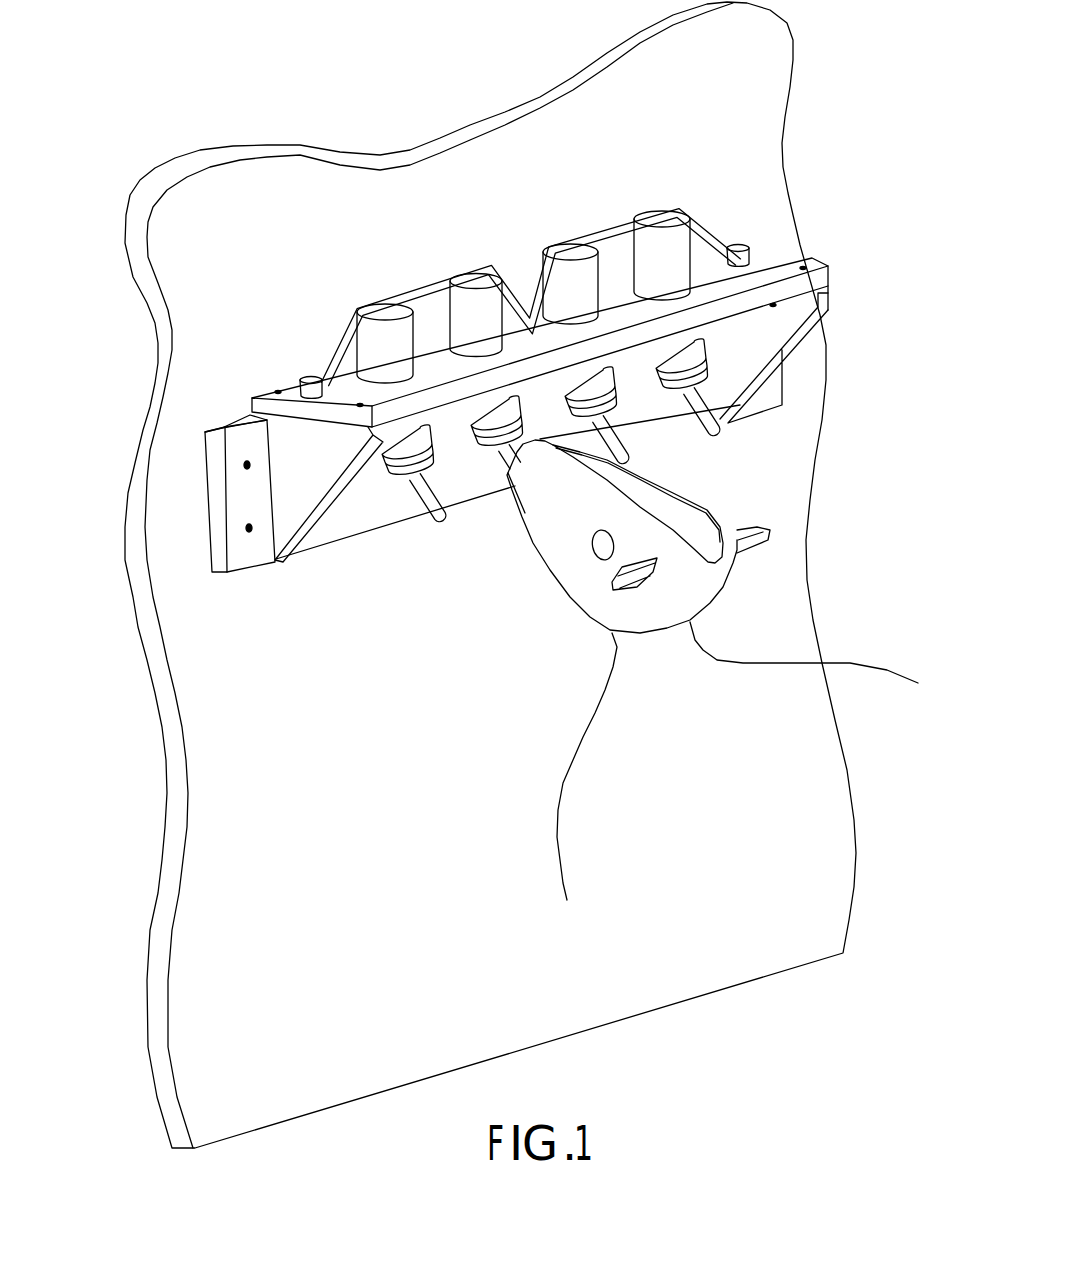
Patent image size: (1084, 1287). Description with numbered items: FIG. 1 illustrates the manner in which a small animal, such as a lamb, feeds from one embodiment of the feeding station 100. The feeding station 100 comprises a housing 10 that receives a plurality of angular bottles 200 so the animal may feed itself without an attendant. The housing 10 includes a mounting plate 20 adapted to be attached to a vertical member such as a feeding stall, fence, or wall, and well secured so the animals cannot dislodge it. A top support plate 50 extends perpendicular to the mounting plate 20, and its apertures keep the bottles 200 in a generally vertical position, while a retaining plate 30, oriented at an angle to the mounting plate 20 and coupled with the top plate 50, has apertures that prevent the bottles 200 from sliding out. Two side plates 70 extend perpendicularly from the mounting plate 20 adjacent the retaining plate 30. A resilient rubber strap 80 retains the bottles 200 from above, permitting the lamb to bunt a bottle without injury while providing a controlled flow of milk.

The feeding station 100 is at (420, 108).
The housing 10 is at (848, 258).
The top support plate 50 is at (762, 270).
The side plates 70 is at (312, 468).
The mounting plate 20 is at (243, 553).
The resilient rubber strap 80 is at (343, 347).
The angular bottles 200 is at (640, 211).
The retaining plate 30 is at (370, 472).